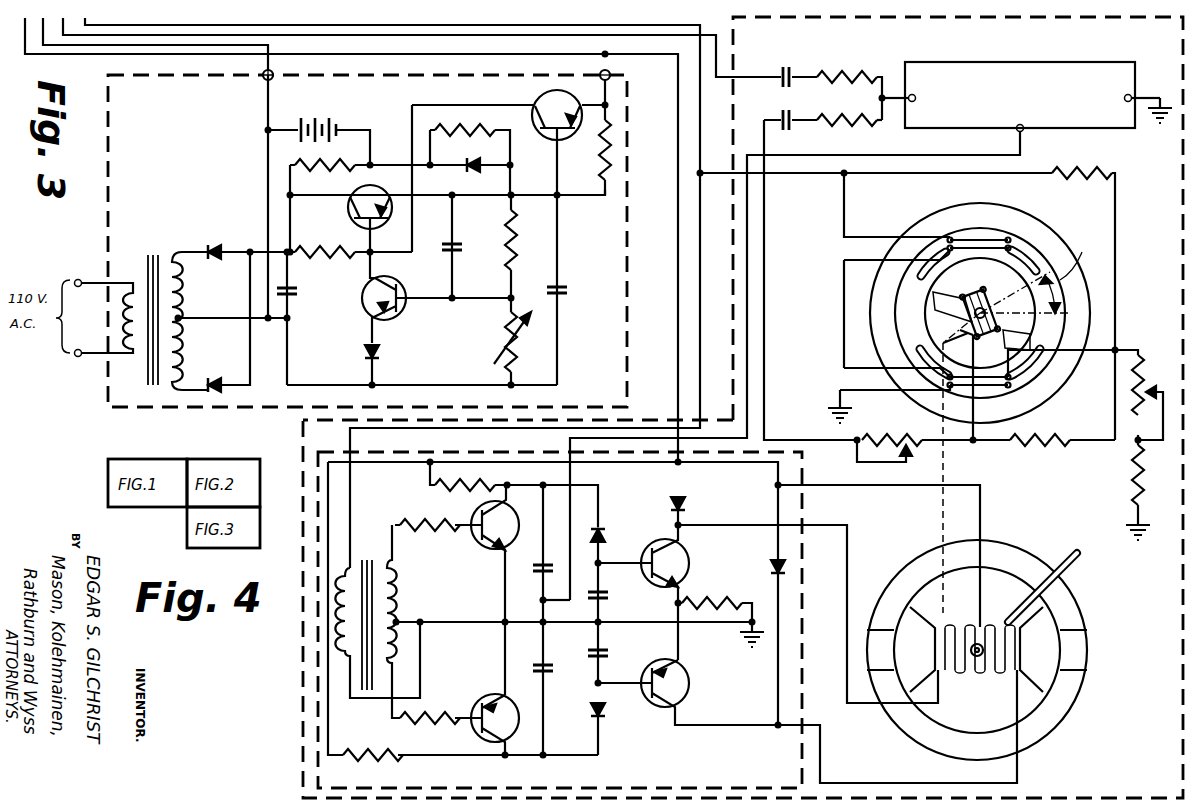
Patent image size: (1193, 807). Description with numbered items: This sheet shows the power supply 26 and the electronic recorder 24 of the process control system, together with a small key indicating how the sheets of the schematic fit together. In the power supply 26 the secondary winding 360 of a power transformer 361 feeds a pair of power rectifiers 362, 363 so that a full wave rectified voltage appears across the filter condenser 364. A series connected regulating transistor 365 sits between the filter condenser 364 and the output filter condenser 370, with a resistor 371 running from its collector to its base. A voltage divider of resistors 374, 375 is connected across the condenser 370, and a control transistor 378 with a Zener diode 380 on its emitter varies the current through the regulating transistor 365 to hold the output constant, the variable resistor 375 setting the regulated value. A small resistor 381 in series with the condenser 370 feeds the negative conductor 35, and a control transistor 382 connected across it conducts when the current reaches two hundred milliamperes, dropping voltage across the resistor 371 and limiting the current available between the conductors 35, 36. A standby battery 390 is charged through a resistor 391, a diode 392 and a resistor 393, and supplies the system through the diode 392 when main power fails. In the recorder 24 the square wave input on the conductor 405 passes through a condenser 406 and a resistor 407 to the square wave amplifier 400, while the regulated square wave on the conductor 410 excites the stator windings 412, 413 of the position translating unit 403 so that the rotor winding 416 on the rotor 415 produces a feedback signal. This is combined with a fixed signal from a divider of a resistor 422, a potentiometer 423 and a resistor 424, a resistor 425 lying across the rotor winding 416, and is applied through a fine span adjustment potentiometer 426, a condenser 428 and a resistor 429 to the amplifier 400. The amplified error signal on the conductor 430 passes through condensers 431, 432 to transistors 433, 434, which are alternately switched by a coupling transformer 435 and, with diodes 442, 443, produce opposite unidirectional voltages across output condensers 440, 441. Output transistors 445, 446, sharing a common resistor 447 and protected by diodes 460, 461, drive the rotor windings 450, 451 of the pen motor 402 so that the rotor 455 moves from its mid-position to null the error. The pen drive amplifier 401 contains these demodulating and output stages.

The recorder 24 is at (743, 407).
The power supply 26 is at (367, 241).
The negative supply conductor 35 is at (514, 66).
The conductor 36 is at (275, 72).
The secondary winding 360 is at (182, 300).
The power transformer 361 is at (158, 243).
The power rectifier 362 is at (232, 366).
The power rectifier 363 is at (240, 242).
The filter condenser 364 is at (300, 290).
The series connected regulating transistor 365 is at (348, 218).
The output filter condenser 370 is at (567, 290).
The resistor 371 is at (312, 258).
The resistor 374 is at (506, 226).
The variable resistor 375 is at (505, 336).
The control transistor 378 is at (398, 314).
The Zener diode 380 is at (382, 352).
The resistor 381 is at (598, 188).
The control transistor 382 is at (540, 96).
The standby battery 390 is at (345, 105).
The resistor 391 is at (339, 170).
The diode 392 is at (464, 182).
The resistor 393 is at (461, 128).
The square wave amplifier 400 is at (1132, 62).
The pen drive amplifier 401 is at (560, 620).
The pen motor 402 is at (1150, 584).
The position translating unit 403 is at (1062, 226).
The conductor 405 is at (452, 48).
The condenser 406 is at (778, 66).
The resistor 407 is at (844, 66).
The conductor 410 is at (647, 420).
The stator winding 412 is at (978, 212).
The stator winding 413 is at (1020, 396).
The rotor 415 is at (932, 318).
The rotor winding 416 is at (994, 280).
The resistor 422 is at (1104, 165).
The potentiometer 423 is at (1157, 372).
The resistor 424 is at (1134, 480).
The resistor 425 is at (1028, 448).
The fine span adjustment potentiometer 426 is at (864, 428).
The condenser 428 is at (780, 110).
The resistor 429 is at (832, 130).
The conductor 430 is at (1020, 154).
The condenser 431 is at (536, 563).
The condenser 432 is at (524, 666).
The transistor 433 is at (474, 492).
The transistor 434 is at (474, 730).
The coupling transformer 435 is at (378, 526).
The output condenser 440 is at (610, 598).
The output condenser 441 is at (610, 652).
The diode 442 is at (612, 526).
The diode 443 is at (608, 714).
The output transistor 445 is at (679, 558).
The output transistor 446 is at (690, 674).
The common resistor 447 is at (710, 599).
The rotor winding 450 is at (958, 690).
The rotor winding 451 is at (993, 674).
The rotor 455 is at (910, 618).
The diode 460 is at (690, 492).
The diode 461 is at (776, 554).